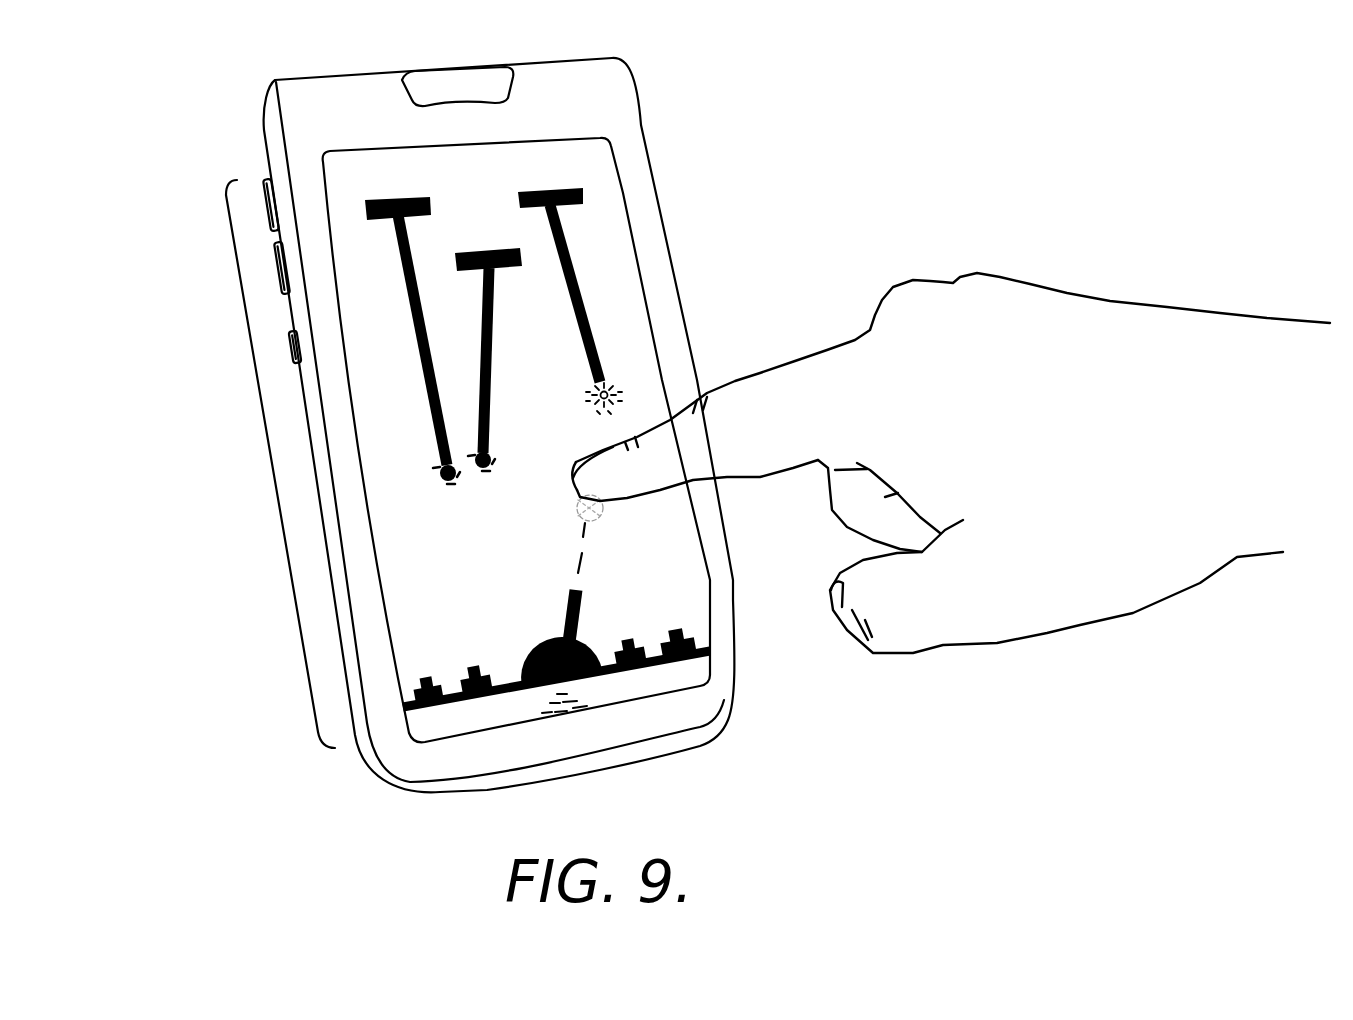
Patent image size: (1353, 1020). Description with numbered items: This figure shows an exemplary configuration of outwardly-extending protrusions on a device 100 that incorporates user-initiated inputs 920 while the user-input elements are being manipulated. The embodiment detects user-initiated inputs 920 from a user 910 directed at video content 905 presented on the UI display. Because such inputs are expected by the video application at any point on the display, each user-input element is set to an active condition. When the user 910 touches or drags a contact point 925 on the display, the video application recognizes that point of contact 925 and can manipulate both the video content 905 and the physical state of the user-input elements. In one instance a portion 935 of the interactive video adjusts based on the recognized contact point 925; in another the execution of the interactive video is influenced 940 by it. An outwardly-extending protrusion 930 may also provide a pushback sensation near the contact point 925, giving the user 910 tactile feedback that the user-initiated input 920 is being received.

The mobile device 100 is at (132, 160).
The video content 905 is at (259, 454).
The user 910 is at (920, 463).
The user-initiated input 920 is at (568, 487).
The contact point 925 is at (573, 476).
The outwardly-extending protrusion 930 is at (604, 523).
The portion of the interactive video 935 is at (527, 643).
The influence on execution of the interactive video 940 is at (621, 380).